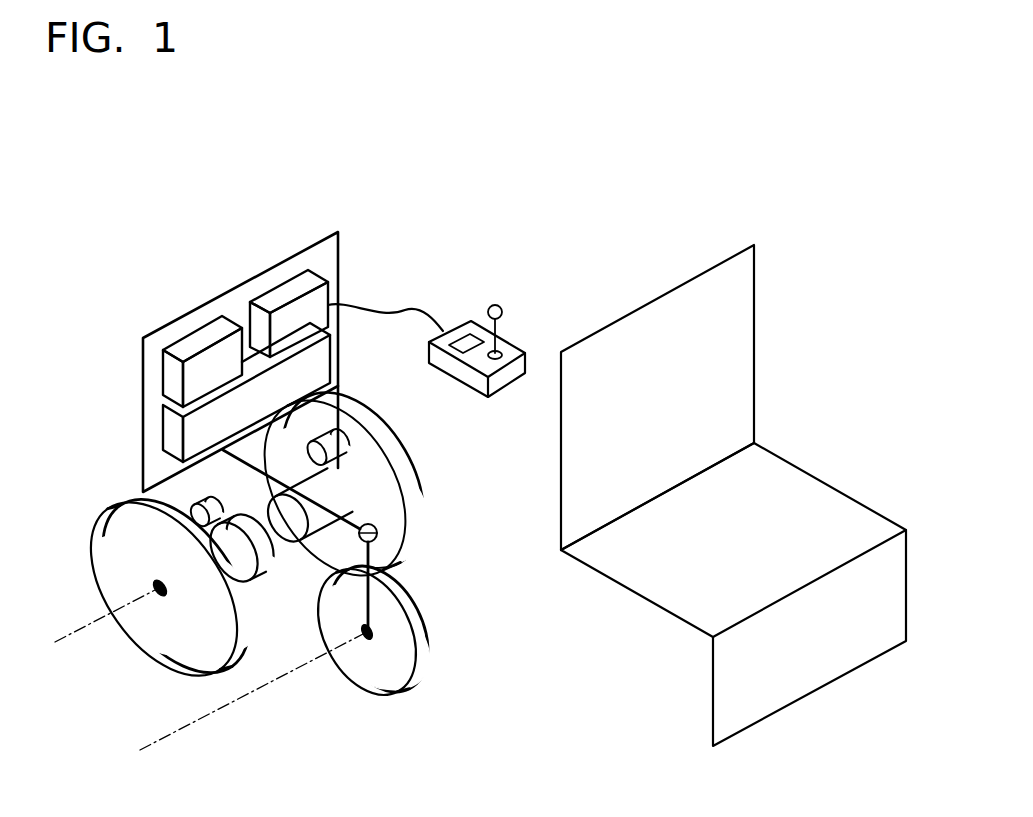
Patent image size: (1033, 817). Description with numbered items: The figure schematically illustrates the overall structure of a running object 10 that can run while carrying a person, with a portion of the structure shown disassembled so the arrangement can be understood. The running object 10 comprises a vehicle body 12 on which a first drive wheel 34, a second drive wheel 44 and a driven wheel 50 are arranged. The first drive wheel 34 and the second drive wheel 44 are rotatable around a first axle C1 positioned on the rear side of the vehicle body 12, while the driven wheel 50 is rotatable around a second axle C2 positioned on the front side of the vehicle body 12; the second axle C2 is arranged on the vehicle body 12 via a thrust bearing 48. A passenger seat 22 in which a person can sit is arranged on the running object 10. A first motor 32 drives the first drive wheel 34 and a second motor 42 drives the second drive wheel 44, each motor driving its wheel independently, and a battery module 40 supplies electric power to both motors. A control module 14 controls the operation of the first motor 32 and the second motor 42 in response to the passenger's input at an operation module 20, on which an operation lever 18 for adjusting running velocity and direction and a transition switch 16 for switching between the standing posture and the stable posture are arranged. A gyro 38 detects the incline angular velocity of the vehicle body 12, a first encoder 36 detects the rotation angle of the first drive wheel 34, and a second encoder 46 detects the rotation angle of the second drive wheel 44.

The running object 10 is at (497, 132).
The vehicle body 12 is at (318, 238).
The control module 14 is at (287, 293).
The transition switch 16 is at (472, 320).
The operation lever 18 is at (497, 304).
The operation module 20 is at (520, 368).
The passenger seat 22 is at (690, 275).
The first motor 32 is at (343, 500).
The first drive wheel 34 is at (398, 472).
The first encoder 36 is at (340, 432).
The gyro 38 is at (170, 377).
The battery module 40 is at (172, 433).
The second motor 42 is at (242, 557).
The second drive wheel 44 is at (102, 543).
The second encoder 46 is at (198, 478).
The thrust bearing 48 is at (377, 536).
The driven wheel 50 is at (378, 677).
The first axle C1 is at (89, 626).
The second axle C2 is at (237, 703).